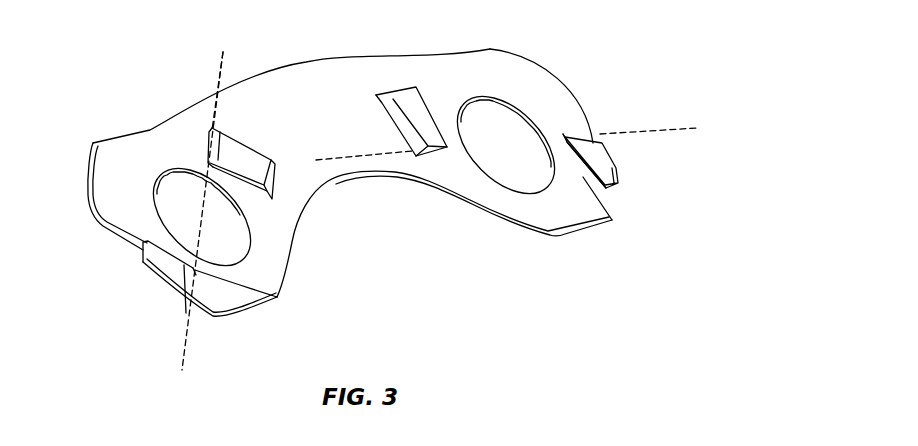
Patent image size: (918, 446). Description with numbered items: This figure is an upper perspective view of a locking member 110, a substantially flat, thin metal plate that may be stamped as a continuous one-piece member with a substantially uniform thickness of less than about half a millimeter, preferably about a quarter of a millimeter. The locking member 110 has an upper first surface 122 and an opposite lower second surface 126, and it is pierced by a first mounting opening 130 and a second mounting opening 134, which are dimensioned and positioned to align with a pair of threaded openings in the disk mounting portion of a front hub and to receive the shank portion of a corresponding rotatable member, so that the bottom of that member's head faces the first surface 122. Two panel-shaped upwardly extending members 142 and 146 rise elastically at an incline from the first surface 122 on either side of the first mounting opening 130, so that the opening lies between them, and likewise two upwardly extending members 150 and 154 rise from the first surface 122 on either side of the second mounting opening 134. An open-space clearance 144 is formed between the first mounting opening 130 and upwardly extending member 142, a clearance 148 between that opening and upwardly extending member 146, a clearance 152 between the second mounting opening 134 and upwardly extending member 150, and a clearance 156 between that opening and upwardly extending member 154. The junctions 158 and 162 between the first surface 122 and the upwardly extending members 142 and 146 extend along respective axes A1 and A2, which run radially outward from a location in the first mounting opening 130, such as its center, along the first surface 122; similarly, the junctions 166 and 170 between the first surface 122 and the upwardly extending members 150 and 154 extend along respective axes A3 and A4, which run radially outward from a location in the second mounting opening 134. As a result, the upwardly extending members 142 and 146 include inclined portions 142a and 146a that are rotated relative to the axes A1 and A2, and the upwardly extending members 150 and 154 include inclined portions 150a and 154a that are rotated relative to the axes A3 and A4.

The locking member 110 is at (372, 151).
The first surface 122 is at (325, 88).
The second surface 126 is at (346, 183).
The first mounting opening 130 is at (167, 205).
The second mounting opening 134 is at (493, 118).
The upwardly extending member 142 is at (175, 280).
The inclined portion 142a is at (157, 281).
The open-space clearance 144 is at (195, 270).
The upwardly extending member 146 is at (212, 140).
The inclined portion 146a is at (243, 152).
The open-space clearance 148 is at (208, 163).
The upwardly extending member 150 is at (404, 129).
The inclined portion 150a is at (418, 117).
The open-space clearance 152 is at (437, 152).
The upwardly extending member 154 is at (598, 188).
The inclined portion 154a is at (593, 162).
The open-space clearance 156 is at (565, 137).
The junction 158 is at (277, 297).
The junction 162 is at (210, 145).
The junction 166 is at (446, 190).
The junction 170 is at (584, 132).
The axis A1 is at (186, 365).
The axis A2 is at (219, 63).
The axis A3 is at (342, 158).
The axis A4 is at (672, 128).